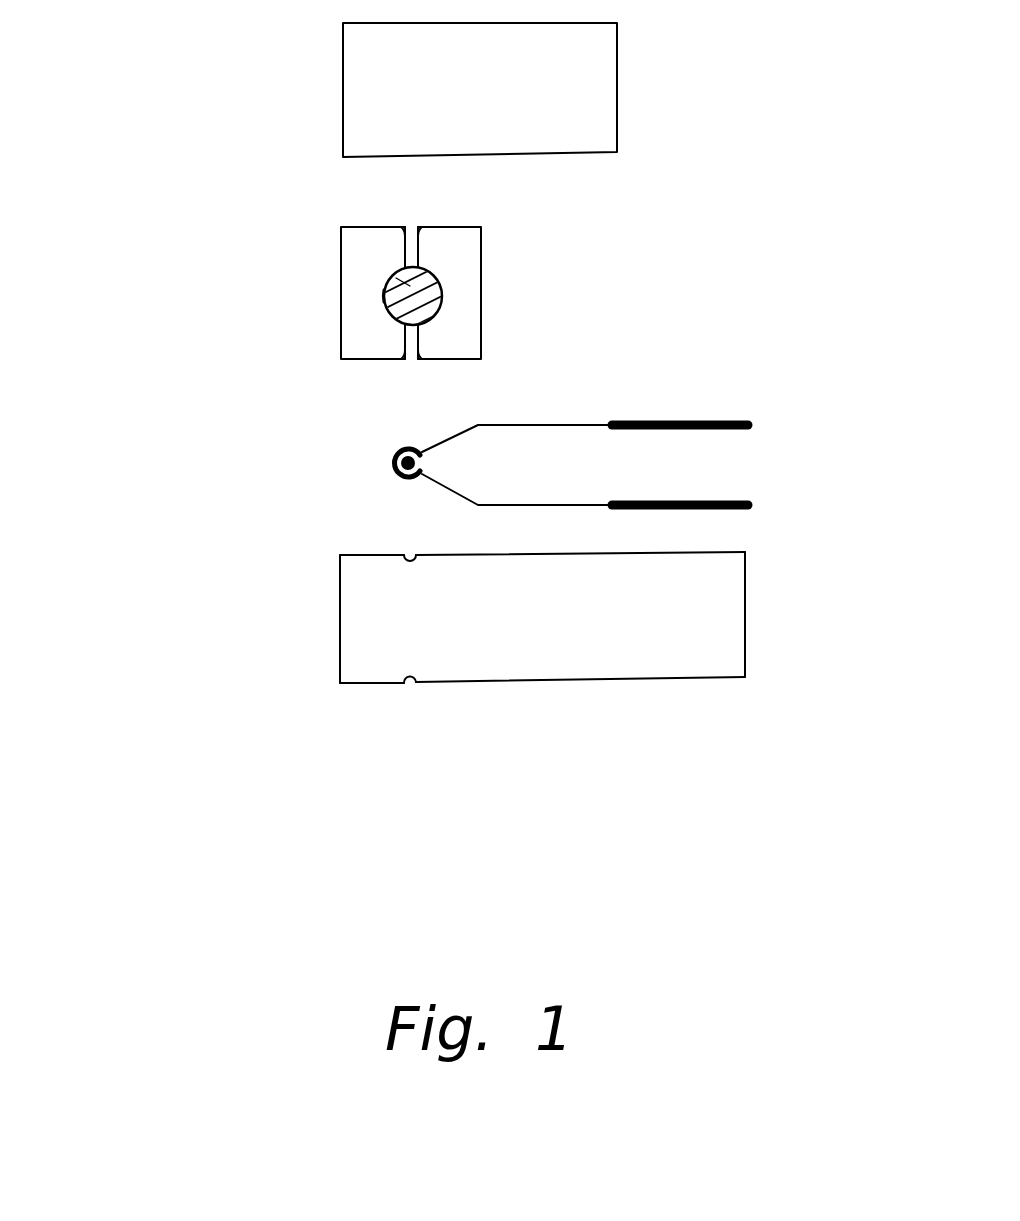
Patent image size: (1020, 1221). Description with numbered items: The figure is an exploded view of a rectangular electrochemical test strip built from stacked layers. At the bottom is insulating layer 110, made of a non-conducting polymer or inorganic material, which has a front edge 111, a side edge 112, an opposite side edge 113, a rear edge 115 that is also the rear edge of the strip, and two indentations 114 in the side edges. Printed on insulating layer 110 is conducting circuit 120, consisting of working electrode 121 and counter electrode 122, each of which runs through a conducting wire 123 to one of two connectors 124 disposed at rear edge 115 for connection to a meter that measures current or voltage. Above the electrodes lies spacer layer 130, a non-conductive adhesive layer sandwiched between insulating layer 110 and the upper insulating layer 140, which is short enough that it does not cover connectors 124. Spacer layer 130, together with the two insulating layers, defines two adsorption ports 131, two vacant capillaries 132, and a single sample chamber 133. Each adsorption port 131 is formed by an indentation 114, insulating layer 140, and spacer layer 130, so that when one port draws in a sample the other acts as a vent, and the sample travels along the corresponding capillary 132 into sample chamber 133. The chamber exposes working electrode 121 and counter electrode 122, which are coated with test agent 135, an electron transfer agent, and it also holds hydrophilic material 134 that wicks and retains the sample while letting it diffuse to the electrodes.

The insulating layer 110 is at (273, 630).
The front edge 111 is at (338, 652).
The side edge 112 is at (618, 682).
The side edge 113 is at (653, 550).
The indentations 114 is at (410, 555).
The rear edge 115 is at (745, 613).
The conducting circuit 120 is at (285, 465).
The working electrode 121 is at (395, 450).
The counter electrode 122 is at (392, 468).
The conducting wires 123 is at (563, 425).
The connectors 124 is at (678, 425).
The spacer layer 130 is at (290, 268).
The adsorption ports 131 is at (413, 229).
The capillaries 132 is at (418, 246).
The sample chamber 133 is at (384, 302).
The hydrophilic material 134 is at (430, 310).
The test agent 135 is at (403, 282).
The insulating layer 140 is at (293, 100).